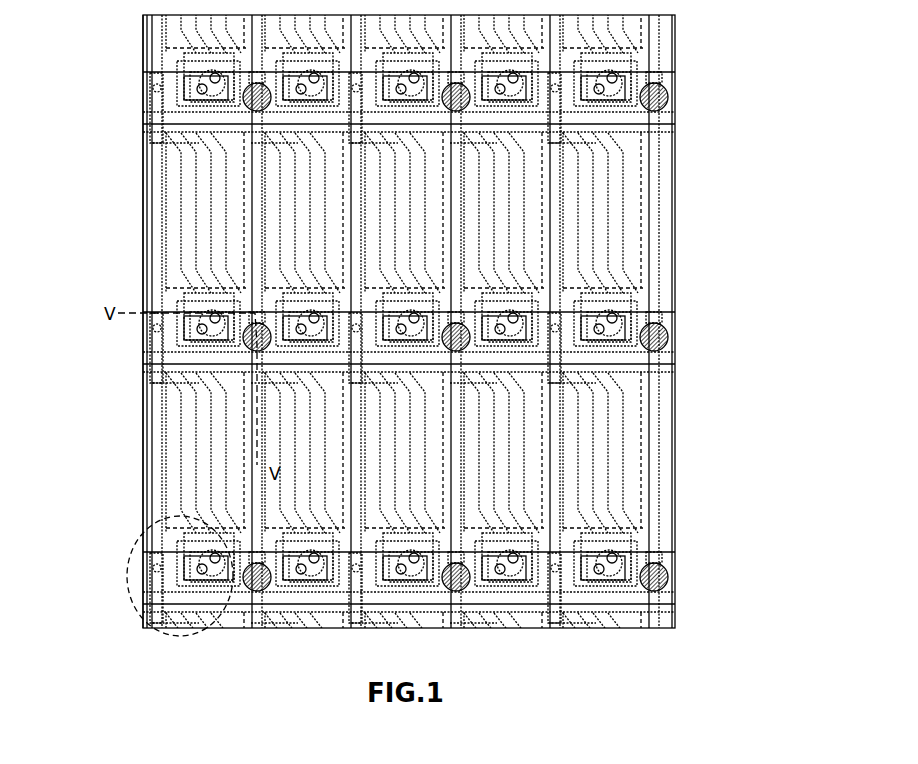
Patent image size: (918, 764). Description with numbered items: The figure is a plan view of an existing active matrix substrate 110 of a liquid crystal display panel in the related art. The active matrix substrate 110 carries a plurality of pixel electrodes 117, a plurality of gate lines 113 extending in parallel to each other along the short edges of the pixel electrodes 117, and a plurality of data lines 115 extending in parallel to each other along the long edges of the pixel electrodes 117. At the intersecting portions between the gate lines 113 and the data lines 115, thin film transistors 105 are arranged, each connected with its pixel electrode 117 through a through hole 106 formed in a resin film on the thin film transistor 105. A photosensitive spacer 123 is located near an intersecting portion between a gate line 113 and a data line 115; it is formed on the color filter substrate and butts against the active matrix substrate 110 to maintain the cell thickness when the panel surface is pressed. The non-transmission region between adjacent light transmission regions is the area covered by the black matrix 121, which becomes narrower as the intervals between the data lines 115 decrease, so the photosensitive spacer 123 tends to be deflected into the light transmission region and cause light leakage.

The active matrix substrate 110 is at (700, 215).
The through hole 106 is at (200, 318).
The gate line 113 is at (622, 355).
The pixel electrode 117 is at (615, 457).
The black matrix 121 is at (147, 447).
The thin film transistor 105 is at (138, 543).
The data line 115 is at (655, 515).
The photosensitive spacer 123 is at (657, 578).